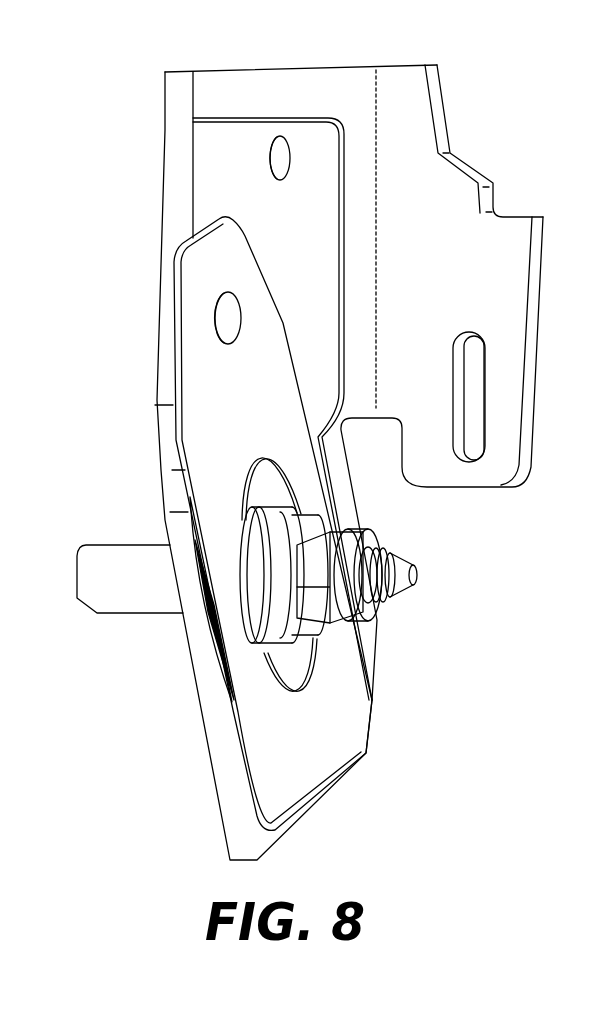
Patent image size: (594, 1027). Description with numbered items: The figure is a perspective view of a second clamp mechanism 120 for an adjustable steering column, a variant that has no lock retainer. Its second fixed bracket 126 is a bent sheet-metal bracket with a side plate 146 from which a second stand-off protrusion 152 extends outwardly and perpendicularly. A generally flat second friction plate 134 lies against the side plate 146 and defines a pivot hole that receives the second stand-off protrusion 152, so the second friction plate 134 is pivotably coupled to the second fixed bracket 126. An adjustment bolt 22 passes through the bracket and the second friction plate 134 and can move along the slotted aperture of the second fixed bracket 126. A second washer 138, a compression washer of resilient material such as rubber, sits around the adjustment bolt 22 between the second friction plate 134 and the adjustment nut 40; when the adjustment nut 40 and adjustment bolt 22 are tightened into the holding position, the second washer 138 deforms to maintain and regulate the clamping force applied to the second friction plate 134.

The second clamp mechanism 120 is at (116, 78).
The second fixed bracket 126 is at (477, 163).
The side plate 146 is at (212, 182).
The second stand-off protrusion 152 is at (232, 316).
The second friction plate 134 is at (276, 269).
The second washer 138 is at (297, 503).
The adjustment nut 40 is at (378, 528).
The adjustment bolt 22 is at (118, 562).